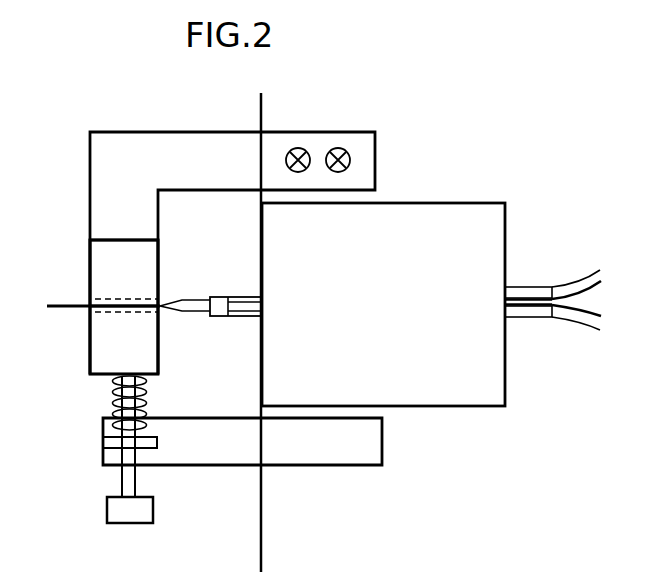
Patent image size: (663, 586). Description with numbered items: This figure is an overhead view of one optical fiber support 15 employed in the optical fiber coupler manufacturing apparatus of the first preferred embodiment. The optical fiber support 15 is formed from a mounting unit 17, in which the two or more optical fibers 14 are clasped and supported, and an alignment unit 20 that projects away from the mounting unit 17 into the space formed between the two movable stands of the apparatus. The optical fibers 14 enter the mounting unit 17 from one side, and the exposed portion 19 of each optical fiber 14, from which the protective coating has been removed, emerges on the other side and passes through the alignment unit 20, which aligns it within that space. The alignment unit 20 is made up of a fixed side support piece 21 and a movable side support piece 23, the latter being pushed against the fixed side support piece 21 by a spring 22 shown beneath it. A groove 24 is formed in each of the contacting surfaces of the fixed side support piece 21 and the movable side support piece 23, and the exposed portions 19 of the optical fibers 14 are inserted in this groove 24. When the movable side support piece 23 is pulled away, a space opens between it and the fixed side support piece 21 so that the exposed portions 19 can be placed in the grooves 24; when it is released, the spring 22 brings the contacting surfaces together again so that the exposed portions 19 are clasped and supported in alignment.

The optical fibers 14 is at (222, 318).
The optical fiber support 15 is at (412, 144).
The mounting unit 17 is at (465, 213).
The exposed portion 19 is at (58, 309).
The alignment unit 20 is at (76, 267).
The fixed side support piece 21 is at (145, 265).
The spring 22 is at (117, 393).
The movable side support piece 23 is at (155, 362).
The groove 24 is at (137, 297).